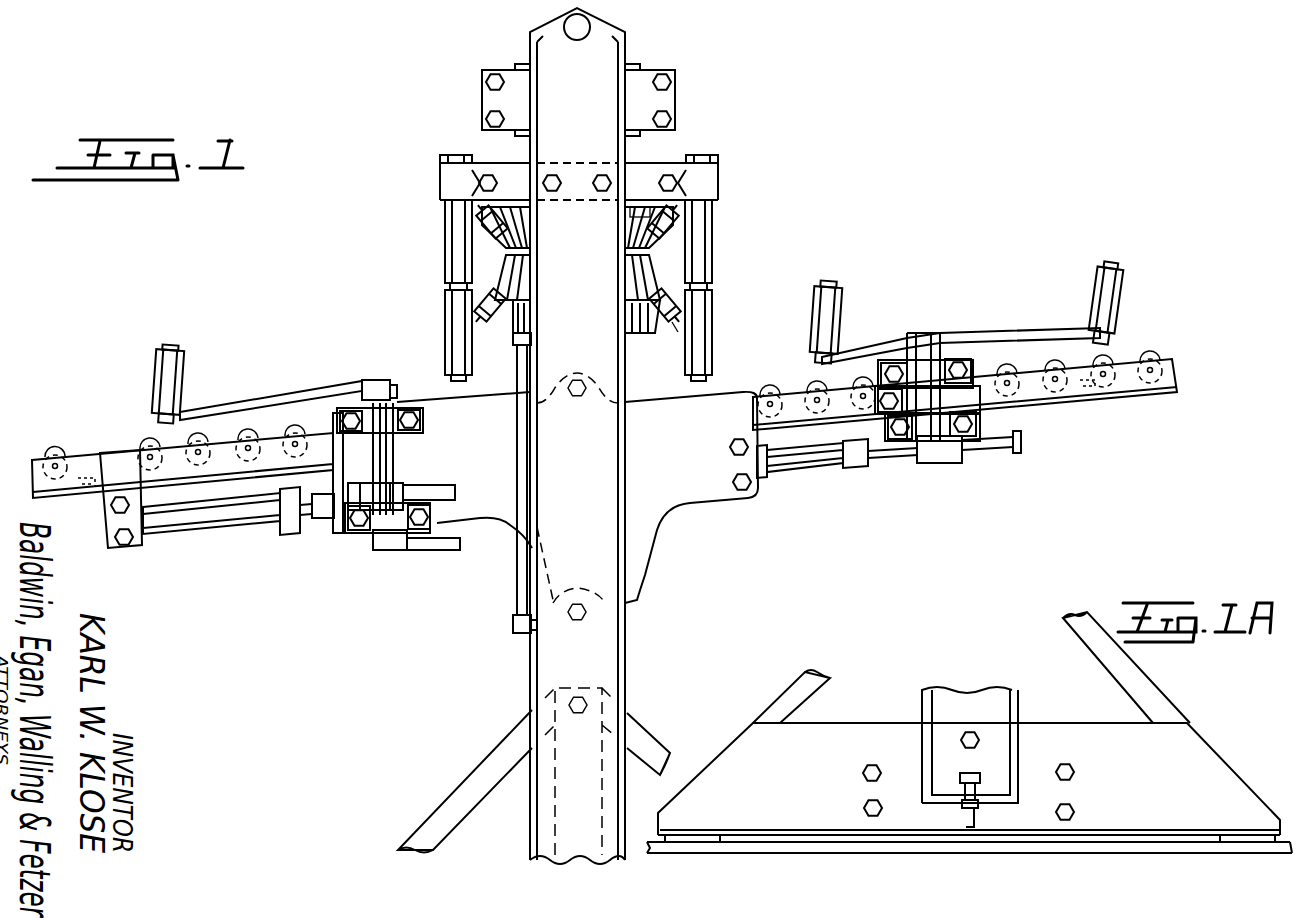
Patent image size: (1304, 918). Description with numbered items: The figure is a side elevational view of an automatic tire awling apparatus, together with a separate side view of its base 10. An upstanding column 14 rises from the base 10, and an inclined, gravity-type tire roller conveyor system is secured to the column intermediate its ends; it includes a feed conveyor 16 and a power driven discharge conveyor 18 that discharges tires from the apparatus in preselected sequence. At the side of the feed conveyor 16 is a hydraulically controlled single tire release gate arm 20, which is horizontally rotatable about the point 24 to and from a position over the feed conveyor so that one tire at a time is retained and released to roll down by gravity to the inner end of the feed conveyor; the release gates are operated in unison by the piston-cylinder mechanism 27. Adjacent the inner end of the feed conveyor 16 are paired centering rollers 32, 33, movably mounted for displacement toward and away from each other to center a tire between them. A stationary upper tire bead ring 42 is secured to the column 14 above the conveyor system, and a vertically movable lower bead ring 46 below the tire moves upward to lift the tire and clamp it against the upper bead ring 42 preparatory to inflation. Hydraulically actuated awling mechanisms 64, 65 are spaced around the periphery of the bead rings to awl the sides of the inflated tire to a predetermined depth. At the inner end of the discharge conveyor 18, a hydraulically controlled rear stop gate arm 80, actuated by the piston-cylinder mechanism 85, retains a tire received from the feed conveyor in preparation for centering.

In FIG. 1A, the base 10 is at (1215, 752).
In FIG. 1, the upstanding column 14 is at (628, 607).
In FIG. 1A, the upstanding column 14 is at (1018, 702).
In FIG. 1, the feed conveyor 16 is at (1167, 358).
In FIG. 1, the discharge conveyor 18 is at (38, 460).
In FIG. 1, the single tire release gate arm 20 is at (1010, 335).
In FIG. 1, the point 24 is at (930, 330).
In FIG. 1, the piston-cylinder mechanism 27 is at (835, 472).
In FIG. 1, the centering roller 32 is at (445, 322).
In FIG. 1, the centering roller 33 is at (712, 315).
In FIG. 1, the upper tire bead ring 42 is at (645, 242).
In FIG. 1, the lower bead ring 46 is at (652, 272).
In FIG. 1, the awling mechanism 64 is at (670, 212).
In FIG. 1, the awling mechanism 65 is at (665, 332).
In FIG. 1, the rear stop gate arm 80 is at (255, 400).
In FIG. 1, the piston-cylinder mechanism 85 is at (230, 518).